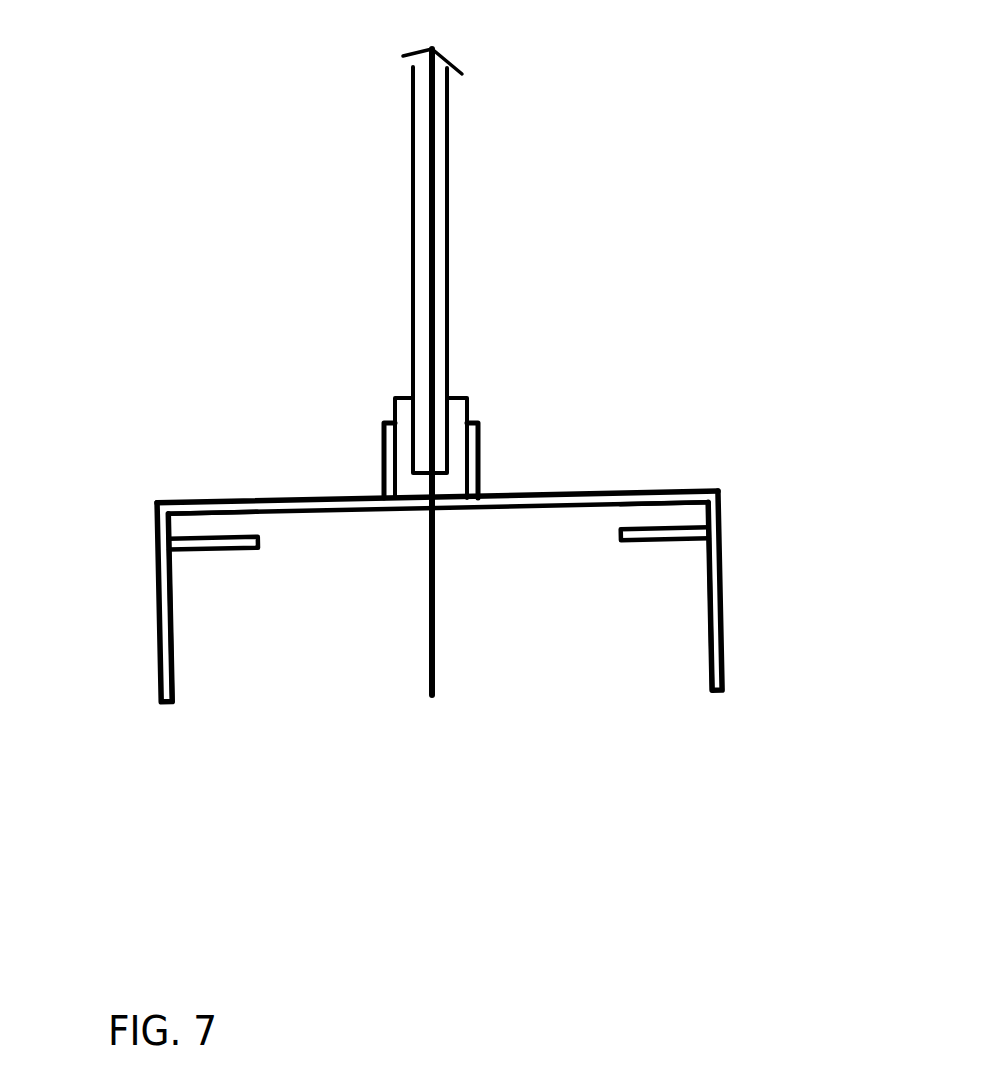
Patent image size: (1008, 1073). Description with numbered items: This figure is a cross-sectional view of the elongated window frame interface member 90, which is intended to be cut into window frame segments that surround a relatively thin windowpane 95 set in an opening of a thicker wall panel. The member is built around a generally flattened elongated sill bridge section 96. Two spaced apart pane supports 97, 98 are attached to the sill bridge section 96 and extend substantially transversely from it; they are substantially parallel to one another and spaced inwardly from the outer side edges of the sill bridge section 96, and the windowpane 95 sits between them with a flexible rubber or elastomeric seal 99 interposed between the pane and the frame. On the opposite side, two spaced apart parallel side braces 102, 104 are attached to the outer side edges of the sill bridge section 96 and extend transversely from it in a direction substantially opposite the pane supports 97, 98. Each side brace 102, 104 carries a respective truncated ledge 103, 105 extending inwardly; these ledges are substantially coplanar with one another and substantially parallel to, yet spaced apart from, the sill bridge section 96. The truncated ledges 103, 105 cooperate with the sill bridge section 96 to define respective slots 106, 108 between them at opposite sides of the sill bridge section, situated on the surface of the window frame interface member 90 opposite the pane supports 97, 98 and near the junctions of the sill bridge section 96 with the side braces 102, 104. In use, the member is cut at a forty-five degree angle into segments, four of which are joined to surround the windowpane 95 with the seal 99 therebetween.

The window frame interface member 90 is at (662, 447).
The windowpane 95 is at (451, 178).
The sill bridge section 96 is at (278, 495).
The pane support 97 is at (378, 450).
The pane support 98 is at (483, 452).
The seal 99 is at (403, 397).
The side brace 102 is at (155, 600).
The truncated ledge 103 is at (225, 557).
The side brace 104 is at (723, 593).
The truncated ledge 105 is at (652, 545).
The slot 106 is at (232, 533).
The slot 108 is at (652, 523).